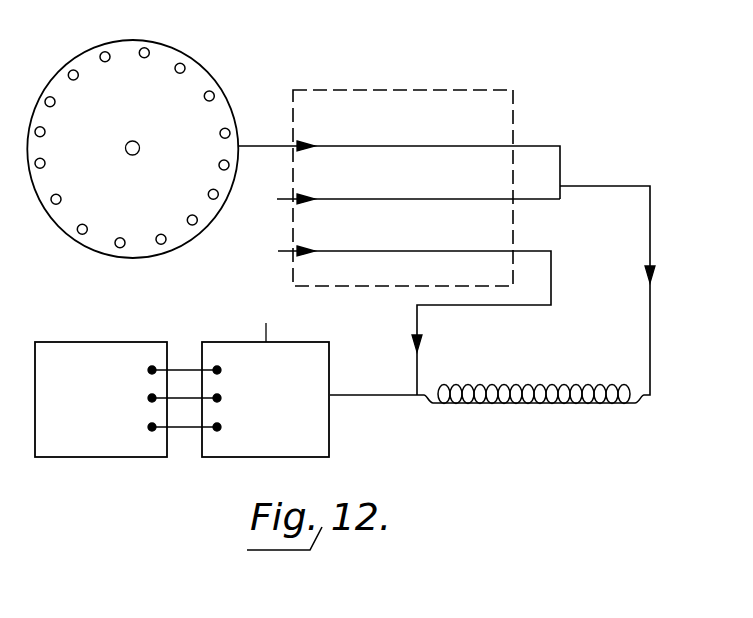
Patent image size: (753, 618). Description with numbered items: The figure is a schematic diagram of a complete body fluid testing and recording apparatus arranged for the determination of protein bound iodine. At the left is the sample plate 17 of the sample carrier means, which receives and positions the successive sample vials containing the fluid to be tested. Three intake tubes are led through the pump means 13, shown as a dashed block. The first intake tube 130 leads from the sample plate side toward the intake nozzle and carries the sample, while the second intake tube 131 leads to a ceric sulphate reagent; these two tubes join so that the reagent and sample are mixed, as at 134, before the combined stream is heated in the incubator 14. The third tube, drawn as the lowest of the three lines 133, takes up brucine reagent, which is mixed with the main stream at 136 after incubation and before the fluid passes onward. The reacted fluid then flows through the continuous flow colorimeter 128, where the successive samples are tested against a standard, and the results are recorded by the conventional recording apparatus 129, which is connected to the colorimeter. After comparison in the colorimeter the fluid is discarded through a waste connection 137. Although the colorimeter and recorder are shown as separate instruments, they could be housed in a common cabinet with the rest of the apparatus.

The sample plate 17 is at (197, 77).
The pump means 13 is at (443, 93).
The intake tube 130 is at (280, 128).
The intake tube 131 is at (282, 197).
The third signal line 133 is at (282, 248).
The mixing point 134 is at (573, 185).
The mixing point 136 is at (420, 397).
The incubator 14 is at (513, 405).
The recording apparatus 129 is at (108, 455).
The continuous flow colorimeter 128 is at (258, 457).
The waste connection 137 is at (266, 330).